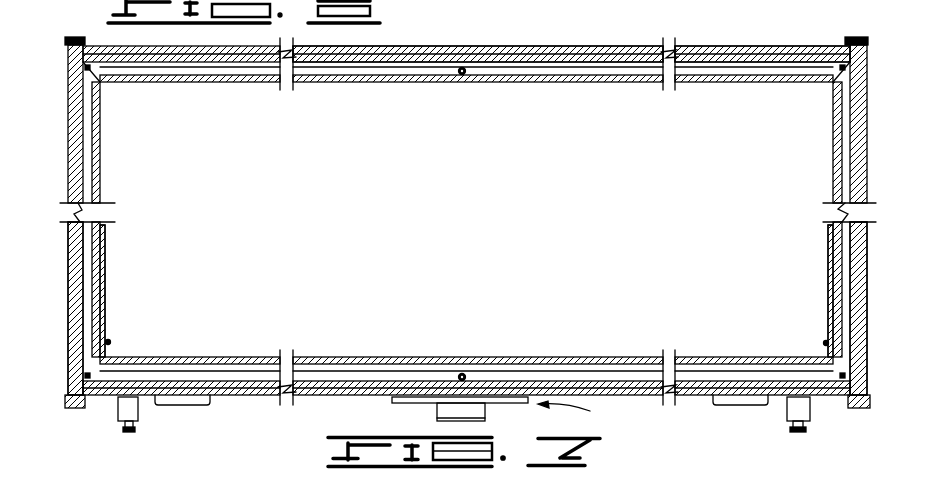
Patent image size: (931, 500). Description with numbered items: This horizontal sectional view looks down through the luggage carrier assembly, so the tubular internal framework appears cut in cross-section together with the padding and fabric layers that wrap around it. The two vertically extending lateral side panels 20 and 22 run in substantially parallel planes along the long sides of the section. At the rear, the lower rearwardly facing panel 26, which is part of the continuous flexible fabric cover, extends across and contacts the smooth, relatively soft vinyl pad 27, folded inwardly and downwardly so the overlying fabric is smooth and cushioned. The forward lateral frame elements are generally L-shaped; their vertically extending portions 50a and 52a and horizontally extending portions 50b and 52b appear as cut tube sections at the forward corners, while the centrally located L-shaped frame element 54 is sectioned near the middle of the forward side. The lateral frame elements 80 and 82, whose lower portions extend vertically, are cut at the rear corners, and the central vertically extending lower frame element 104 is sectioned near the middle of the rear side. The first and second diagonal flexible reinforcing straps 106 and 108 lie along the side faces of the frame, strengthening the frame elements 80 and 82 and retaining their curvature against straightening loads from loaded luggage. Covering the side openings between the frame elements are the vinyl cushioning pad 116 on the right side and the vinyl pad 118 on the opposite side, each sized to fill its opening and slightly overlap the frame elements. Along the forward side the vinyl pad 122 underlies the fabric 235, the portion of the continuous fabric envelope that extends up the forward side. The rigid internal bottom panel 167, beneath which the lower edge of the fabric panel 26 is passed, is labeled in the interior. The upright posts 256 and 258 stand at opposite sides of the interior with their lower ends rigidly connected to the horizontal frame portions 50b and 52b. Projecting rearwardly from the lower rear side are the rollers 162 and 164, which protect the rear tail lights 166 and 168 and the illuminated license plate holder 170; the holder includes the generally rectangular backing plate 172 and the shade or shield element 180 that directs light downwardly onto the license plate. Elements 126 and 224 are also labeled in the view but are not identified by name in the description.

The lateral side panel 20 is at (70, 148).
The lateral side panel 22 is at (98, 162).
The rearwardly facing fabric panel 26 is at (536, 357).
The vinyl pad 27 is at (356, 360).
The vertically extending portion of forward lateral frame element 50a is at (100, 94).
The horizontally extending portion of forward lateral frame element 50b is at (88, 262).
The vertically extending portion of forward lateral frame element 52a is at (833, 85).
The horizontally extending portion of forward lateral frame element 52b is at (835, 112).
The centrally located L-shaped frame element 54 is at (462, 78).
The lateral frame element 80 is at (110, 344).
The lateral frame element 82 is at (825, 355).
The central vertically extending lower frame element 104 is at (460, 372).
The first diagonal flexible reinforcing strap 106 is at (828, 252).
The second diagonal reinforcing strap 108 is at (105, 308).
The vinyl cushioning pad 116 is at (862, 310).
The vinyl cushioning pad 118 is at (80, 296).
The vinyl pad 122 is at (576, 53).
The top panel section 126 is at (704, 50).
The roller 162 is at (126, 432).
The roller 164 is at (798, 433).
The rear tail light 166 is at (172, 406).
The rigid internal bottom panel 167 is at (500, 214).
The rear tail light 168 is at (743, 406).
The illuminated license plate holder 170 is at (583, 413).
The backing plate 172 is at (392, 400).
The shade or shield element 180 is at (486, 418).
The inner top panel 224 is at (332, 85).
The forward fabric panel 235 is at (422, 47).
The upright post 256 is at (830, 352).
The upright post 258 is at (108, 338).